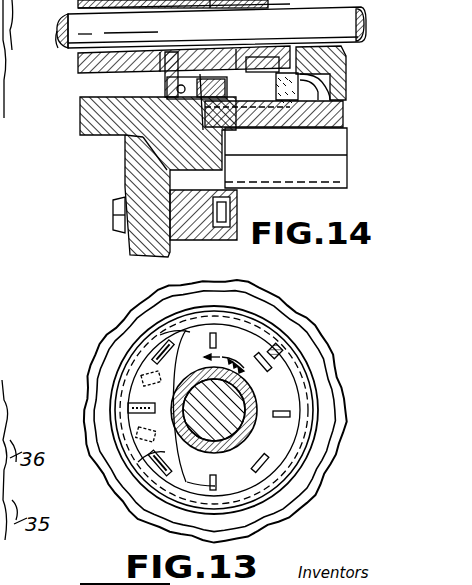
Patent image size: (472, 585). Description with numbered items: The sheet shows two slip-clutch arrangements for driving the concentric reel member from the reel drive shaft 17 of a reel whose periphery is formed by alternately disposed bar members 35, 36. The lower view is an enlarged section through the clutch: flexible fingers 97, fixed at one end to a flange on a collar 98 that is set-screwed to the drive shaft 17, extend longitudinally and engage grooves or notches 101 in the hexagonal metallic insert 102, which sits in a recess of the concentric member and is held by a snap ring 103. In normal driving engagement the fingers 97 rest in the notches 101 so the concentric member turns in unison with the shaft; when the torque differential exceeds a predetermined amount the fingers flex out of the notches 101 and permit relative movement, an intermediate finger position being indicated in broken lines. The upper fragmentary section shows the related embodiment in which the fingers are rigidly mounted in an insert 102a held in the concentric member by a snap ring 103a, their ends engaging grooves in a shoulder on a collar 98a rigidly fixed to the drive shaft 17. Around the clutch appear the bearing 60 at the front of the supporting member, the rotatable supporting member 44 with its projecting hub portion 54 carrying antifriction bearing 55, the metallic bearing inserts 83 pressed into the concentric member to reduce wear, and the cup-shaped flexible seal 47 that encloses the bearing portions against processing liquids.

In FIG. 14, the reel drive shaft 17 is at (64, 56).
In FIG. 13, the reel drive shaft 17 is at (229, 440).
In FIG. 14, the bar members 35 is at (333, 146).
In FIG. 14, the bar members 36 is at (337, 170).
In FIG. 14, the supporting member 44 is at (80, 125).
In FIG. 14, the flexible seal 47 is at (263, 126).
In FIG. 14, the hub portion 54 is at (28, 89).
In FIG. 14, the antifriction bearing 55 is at (180, 100).
In FIG. 14, the bearing 60 is at (204, 10).
In FIG. 13, the bearing 60 is at (248, 417).
In FIG. 14, the metallic bearing inserts 83 is at (339, 58).
In FIG. 13, the flexible fingers 97 is at (138, 463).
In FIG. 13, the collar 98 is at (285, 393).
In FIG. 14, the collar 98a is at (253, 53).
In FIG. 13, the grooves or notches 101 is at (136, 403).
In FIG. 13, the metallic insert 102 is at (148, 363).
In FIG. 14, the insert 102a is at (344, 33).
In FIG. 13, the snap ring 103 is at (266, 333).
In FIG. 14, the snap ring 103a is at (329, 80).